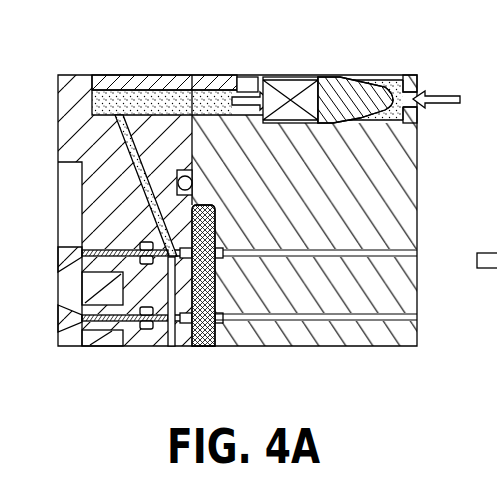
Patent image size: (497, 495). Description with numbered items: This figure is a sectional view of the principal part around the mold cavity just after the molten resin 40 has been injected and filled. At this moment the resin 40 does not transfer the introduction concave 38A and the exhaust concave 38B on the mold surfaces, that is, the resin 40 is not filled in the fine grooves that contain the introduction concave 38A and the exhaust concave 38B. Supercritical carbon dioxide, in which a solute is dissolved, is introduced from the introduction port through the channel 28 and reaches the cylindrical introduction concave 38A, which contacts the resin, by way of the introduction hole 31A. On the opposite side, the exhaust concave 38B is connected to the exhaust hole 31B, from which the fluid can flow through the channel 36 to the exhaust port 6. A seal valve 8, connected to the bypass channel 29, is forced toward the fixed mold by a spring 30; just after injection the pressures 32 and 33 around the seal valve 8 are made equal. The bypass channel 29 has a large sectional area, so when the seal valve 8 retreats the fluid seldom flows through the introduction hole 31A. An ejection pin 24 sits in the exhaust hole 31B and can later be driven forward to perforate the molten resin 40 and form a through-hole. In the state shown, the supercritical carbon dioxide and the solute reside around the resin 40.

The exhaust port 6 is at (98, 75).
The seal valve 8 is at (341, 78).
The ejection pin 24 is at (90, 250).
The channel 28 is at (250, 77).
The bypass channel 29 is at (153, 95).
The spring 30 is at (303, 78).
The introduction hole 31A is at (370, 315).
The exhaust hole 31B is at (173, 346).
The pressure 32 is at (240, 93).
The pressure 33 is at (453, 95).
The channel 36 is at (118, 137).
The introduction concave 38A is at (222, 238).
The exhaust concave 38B is at (187, 235).
The resin 40 is at (218, 335).